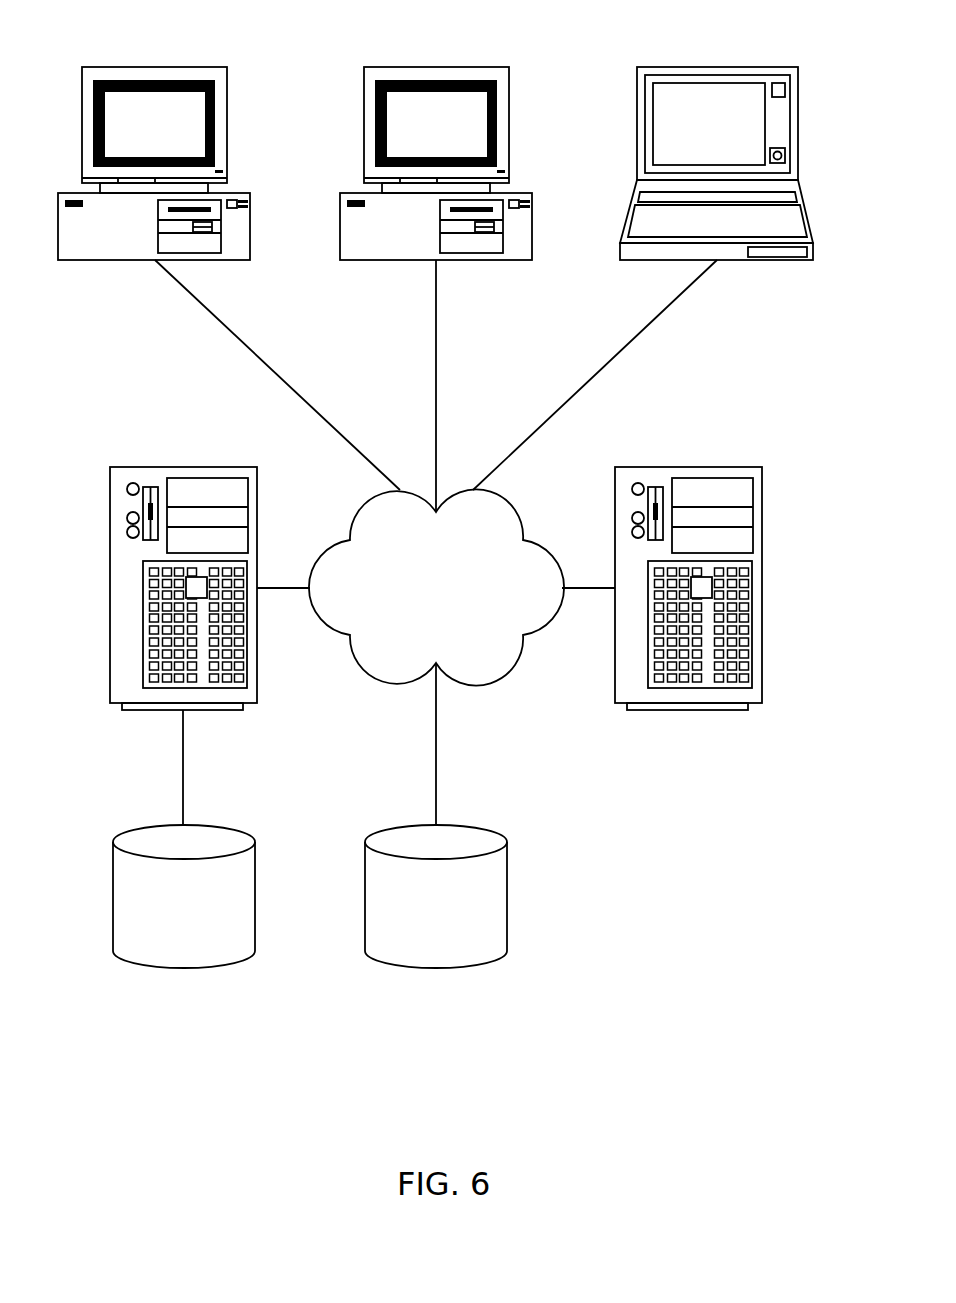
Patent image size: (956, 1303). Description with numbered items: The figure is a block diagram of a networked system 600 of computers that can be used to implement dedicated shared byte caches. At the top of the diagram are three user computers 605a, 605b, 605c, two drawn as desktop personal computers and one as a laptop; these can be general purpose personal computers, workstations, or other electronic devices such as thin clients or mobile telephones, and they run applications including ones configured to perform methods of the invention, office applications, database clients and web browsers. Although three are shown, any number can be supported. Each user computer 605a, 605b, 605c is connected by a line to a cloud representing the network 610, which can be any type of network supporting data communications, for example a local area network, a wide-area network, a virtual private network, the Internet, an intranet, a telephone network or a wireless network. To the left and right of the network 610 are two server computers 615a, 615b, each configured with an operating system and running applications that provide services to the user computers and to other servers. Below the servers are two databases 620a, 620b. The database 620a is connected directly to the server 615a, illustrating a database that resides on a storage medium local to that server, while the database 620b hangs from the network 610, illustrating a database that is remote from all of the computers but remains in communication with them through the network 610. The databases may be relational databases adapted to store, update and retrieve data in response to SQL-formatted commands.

The system 600 is at (680, 1025).
The user computer 605a is at (250, 212).
The user computer 605b is at (338, 212).
The user computer 605c is at (635, 163).
The network 610 is at (472, 687).
The server 615a is at (110, 590).
The server 615b is at (762, 590).
The database 620a is at (182, 970).
The database 620b is at (434, 970).